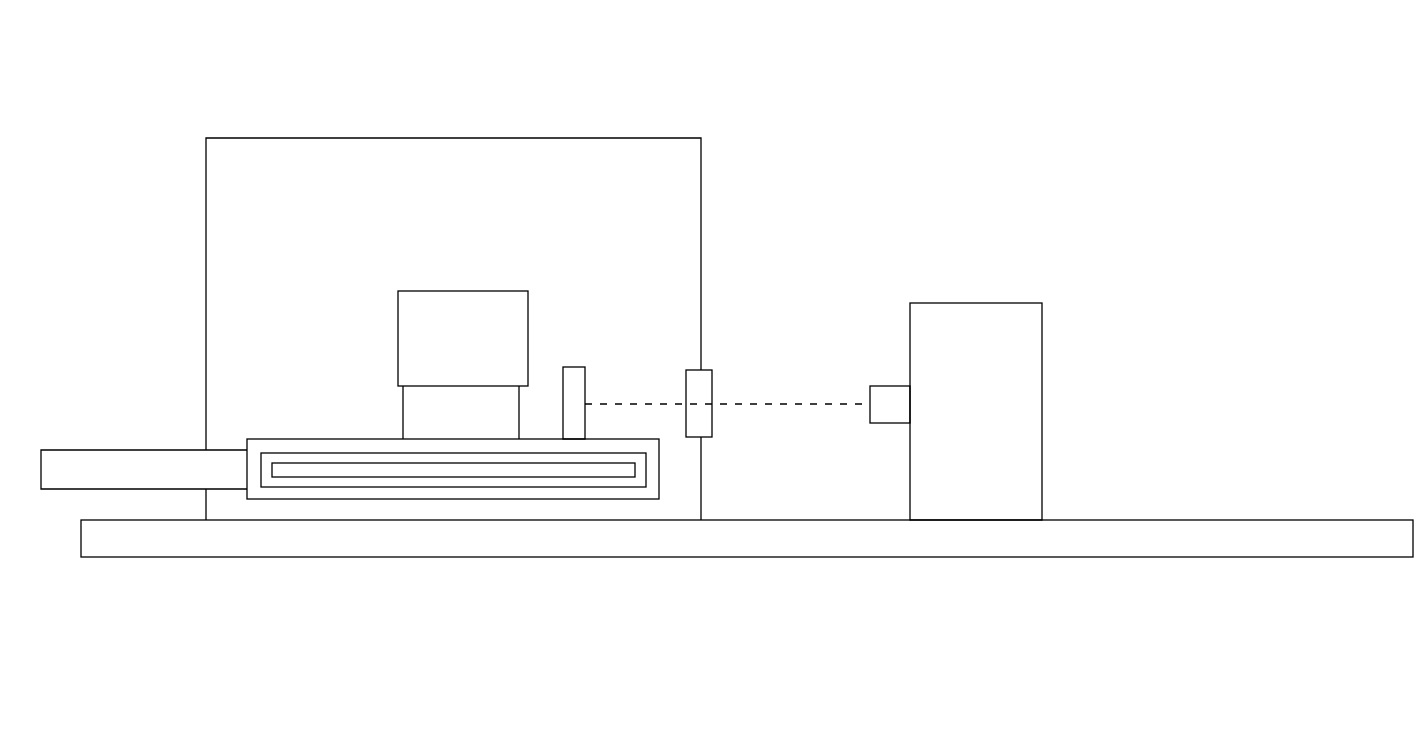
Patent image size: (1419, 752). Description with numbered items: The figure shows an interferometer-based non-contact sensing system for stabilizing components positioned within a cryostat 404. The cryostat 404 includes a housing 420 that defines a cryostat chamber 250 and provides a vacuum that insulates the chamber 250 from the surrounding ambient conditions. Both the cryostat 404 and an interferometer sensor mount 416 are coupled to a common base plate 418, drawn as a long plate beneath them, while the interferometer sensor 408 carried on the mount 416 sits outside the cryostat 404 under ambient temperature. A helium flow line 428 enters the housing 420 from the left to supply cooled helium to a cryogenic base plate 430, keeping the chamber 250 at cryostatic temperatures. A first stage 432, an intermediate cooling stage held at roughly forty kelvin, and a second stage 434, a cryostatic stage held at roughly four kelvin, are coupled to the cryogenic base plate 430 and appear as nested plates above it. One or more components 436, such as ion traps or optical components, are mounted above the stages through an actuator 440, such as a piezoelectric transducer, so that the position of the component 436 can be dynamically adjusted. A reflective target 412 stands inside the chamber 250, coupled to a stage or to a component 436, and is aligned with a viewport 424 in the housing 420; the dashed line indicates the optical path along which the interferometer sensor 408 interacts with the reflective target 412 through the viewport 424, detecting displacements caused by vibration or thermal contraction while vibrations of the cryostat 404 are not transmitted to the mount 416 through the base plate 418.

The cryostat 404 is at (503, 98).
The housing 420 is at (657, 138).
The cryostat chamber 250 is at (663, 210).
The component 436 is at (425, 335).
The actuator 440 is at (488, 432).
The cryogenic base plate 430 is at (255, 490).
The first stage 432 is at (342, 487).
The second stage 434 is at (423, 477).
The reflective target 412 is at (600, 347).
The viewport 424 is at (700, 384).
The interferometer sensor 408 is at (847, 347).
The interferometer sensor mount 416 is at (970, 332).
The helium flow line 428 is at (51, 478).
The base plate 418 is at (1127, 543).